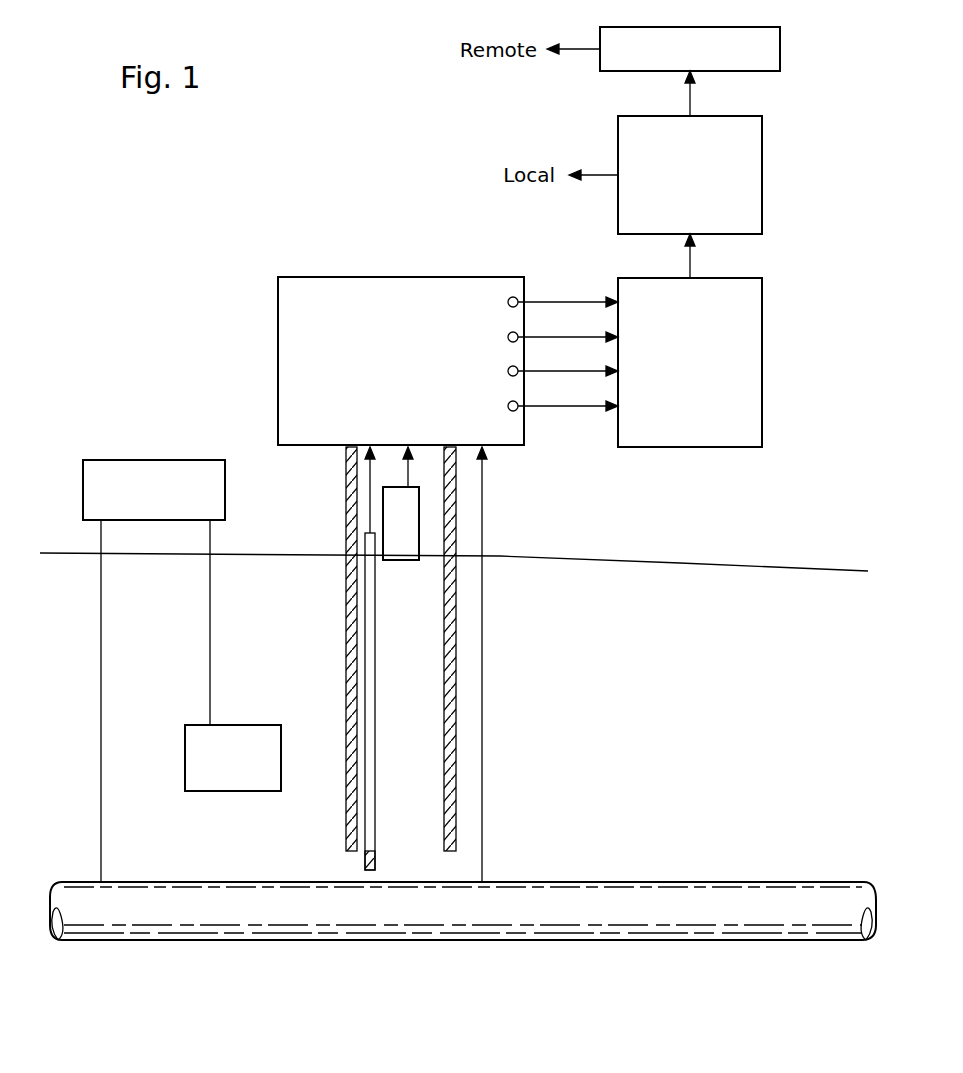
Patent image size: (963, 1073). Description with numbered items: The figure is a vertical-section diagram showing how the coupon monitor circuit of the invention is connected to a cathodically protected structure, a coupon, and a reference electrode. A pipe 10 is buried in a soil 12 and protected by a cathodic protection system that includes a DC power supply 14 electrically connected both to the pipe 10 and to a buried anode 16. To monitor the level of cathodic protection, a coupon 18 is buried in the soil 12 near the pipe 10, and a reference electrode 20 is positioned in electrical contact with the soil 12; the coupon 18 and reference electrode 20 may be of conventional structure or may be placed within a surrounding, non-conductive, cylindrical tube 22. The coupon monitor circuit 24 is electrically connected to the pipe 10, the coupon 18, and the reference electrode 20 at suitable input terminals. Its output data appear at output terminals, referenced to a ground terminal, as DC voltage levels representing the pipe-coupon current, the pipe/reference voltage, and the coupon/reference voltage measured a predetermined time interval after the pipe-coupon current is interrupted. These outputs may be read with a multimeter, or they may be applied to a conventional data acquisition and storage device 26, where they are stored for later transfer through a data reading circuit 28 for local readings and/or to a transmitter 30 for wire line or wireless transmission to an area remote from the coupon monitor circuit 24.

The pipe 10 is at (279, 920).
The soil 12 is at (713, 620).
The DC power supply 14 is at (128, 465).
The anode 16 is at (237, 782).
The coupon 18 is at (375, 858).
The reference electrode 20 is at (402, 524).
The non-conductive cylindrical tube 22 is at (452, 826).
The coupon monitor circuit 24 is at (334, 287).
The data acquisition and storage device 26 is at (752, 315).
The data reading circuit 28 is at (752, 150).
The transmitter 30 is at (772, 35).